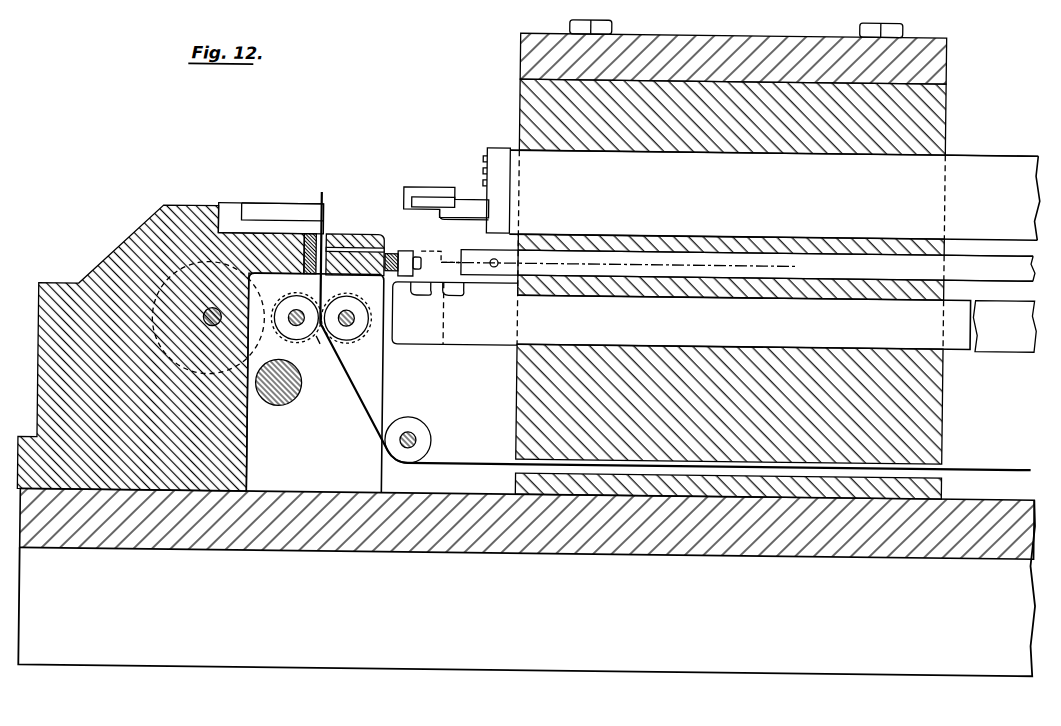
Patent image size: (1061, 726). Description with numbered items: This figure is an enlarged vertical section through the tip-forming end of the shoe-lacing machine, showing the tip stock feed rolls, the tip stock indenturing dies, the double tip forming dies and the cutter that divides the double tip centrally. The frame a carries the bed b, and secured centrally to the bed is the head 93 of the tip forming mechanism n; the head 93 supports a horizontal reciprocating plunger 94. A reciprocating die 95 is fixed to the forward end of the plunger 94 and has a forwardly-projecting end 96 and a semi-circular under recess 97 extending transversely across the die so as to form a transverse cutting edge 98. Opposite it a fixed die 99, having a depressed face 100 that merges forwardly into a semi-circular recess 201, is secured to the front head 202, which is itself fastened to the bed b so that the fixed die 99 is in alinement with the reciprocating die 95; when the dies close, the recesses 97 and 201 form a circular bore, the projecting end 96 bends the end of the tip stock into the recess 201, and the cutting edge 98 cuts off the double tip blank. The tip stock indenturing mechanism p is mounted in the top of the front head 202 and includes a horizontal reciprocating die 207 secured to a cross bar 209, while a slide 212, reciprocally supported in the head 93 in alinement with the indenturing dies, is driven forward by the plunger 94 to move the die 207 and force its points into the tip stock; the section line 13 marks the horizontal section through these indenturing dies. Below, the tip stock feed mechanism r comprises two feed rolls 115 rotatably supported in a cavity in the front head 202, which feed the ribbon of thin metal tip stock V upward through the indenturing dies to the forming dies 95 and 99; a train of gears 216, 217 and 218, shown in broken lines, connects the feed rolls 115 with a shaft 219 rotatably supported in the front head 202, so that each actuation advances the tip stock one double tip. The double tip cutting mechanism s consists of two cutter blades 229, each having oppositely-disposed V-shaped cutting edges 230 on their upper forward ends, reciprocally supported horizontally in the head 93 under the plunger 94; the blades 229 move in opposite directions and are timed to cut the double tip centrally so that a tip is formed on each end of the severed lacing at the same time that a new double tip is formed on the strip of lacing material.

The section line 13 is at (302, 249).
The head 93 is at (517, 99).
The horizontal reciprocating plunger 94 is at (981, 157).
The reciprocating die 95 is at (470, 204).
The forwardly-projecting end 96 is at (415, 199).
The semi-circular under recess 97 is at (450, 201).
The transverse cutting edge 98 is at (440, 212).
The fixed die 99 is at (248, 212).
The depressed face 100 is at (303, 216).
The feed rolls 115 is at (290, 341).
The semi-circular recess 201 is at (284, 208).
The front head 202 is at (142, 243).
The horizontal reciprocating die 207 is at (352, 249).
The cross bar 209 is at (403, 251).
The slide 212 is at (988, 268).
The gear 216 is at (345, 304).
The gear 217 is at (293, 304).
The gear 218 is at (188, 274).
The shaft 219 is at (206, 316).
The cutter blades 229 is at (961, 326).
The V-shaped cutting edges 230 is at (420, 297).
The frame a is at (301, 657).
The bed b is at (313, 548).
The tip forming mechanism n is at (726, 36).
The tip stock indenturing mechanism p is at (748, 266).
The tip stock feed mechanism r is at (316, 352).
The double tip cutting mechanism s is at (744, 322).
The ribbon of thin metal tip stock V is at (323, 211).